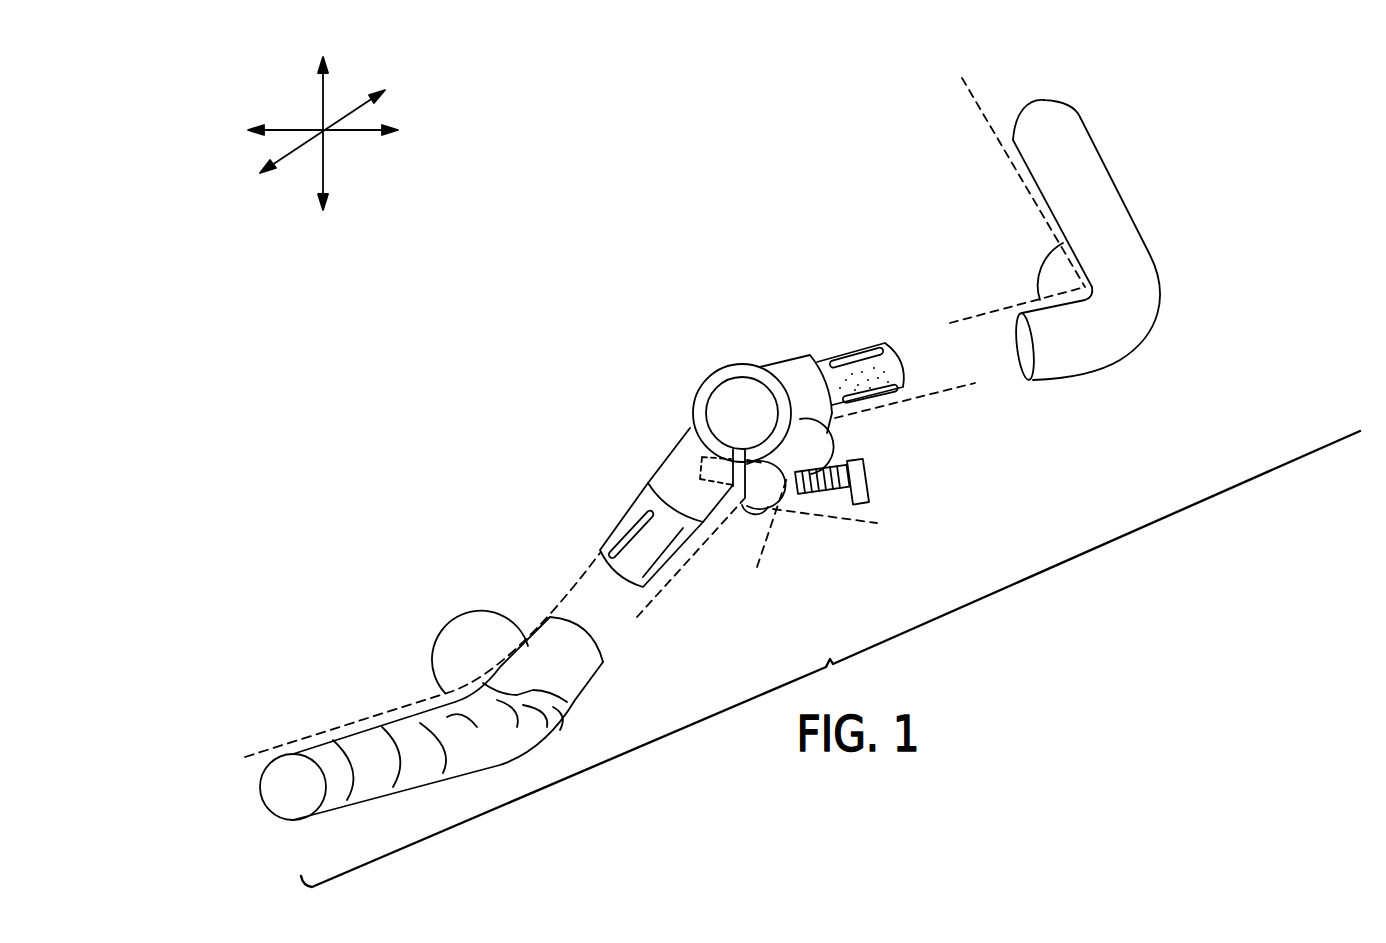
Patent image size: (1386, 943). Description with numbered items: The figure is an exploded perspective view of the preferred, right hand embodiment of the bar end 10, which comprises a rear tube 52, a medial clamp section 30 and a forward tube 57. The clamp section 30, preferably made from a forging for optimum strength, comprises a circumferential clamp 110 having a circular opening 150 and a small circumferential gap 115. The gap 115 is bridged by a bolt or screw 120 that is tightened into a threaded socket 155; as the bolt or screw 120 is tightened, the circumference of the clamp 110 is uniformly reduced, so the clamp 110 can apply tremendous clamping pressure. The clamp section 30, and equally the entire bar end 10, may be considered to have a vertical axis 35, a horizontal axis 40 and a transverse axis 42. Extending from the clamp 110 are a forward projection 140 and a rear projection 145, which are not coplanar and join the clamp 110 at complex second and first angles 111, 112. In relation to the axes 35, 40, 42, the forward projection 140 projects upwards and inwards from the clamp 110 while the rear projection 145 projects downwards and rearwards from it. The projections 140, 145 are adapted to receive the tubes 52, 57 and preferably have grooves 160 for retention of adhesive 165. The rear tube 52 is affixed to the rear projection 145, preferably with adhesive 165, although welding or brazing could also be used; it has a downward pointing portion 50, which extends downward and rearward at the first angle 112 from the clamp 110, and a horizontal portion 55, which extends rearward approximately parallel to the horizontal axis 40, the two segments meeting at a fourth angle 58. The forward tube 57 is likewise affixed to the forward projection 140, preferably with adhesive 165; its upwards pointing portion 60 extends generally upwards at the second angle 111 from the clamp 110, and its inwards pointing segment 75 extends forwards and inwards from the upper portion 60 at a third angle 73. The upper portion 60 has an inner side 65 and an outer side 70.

The bar end 10 is at (1092, 620).
The clamp section 30 is at (660, 232).
The vertical axis 35 is at (327, 87).
The horizontal axis 40 is at (290, 153).
The transverse axis 42 is at (367, 127).
The downward pointing portion 50 is at (573, 673).
The rear tube 52 is at (394, 566).
The horizontal portion 55 is at (373, 737).
The forward tube 57 is at (1238, 256).
The fourth angle 58 is at (478, 645).
The upwards pointing portion 60 is at (1100, 337).
The inner side 65 is at (1036, 305).
The outer side 70 is at (1083, 373).
The third angle 73 is at (1063, 263).
The inwards pointing segment 75 is at (1083, 150).
The circumferential clamp 110 is at (757, 383).
The second angle 111 is at (825, 435).
The first angle 112 is at (771, 520).
The circumferential gap 115 is at (745, 499).
The bolt or screw 120 is at (867, 478).
The forward projection 140 is at (862, 345).
The rear projection 145 is at (665, 567).
The circular opening 150 is at (723, 413).
The threaded socket 155 is at (710, 470).
The grooves 160 is at (905, 387).
The adhesive 165 is at (893, 367).